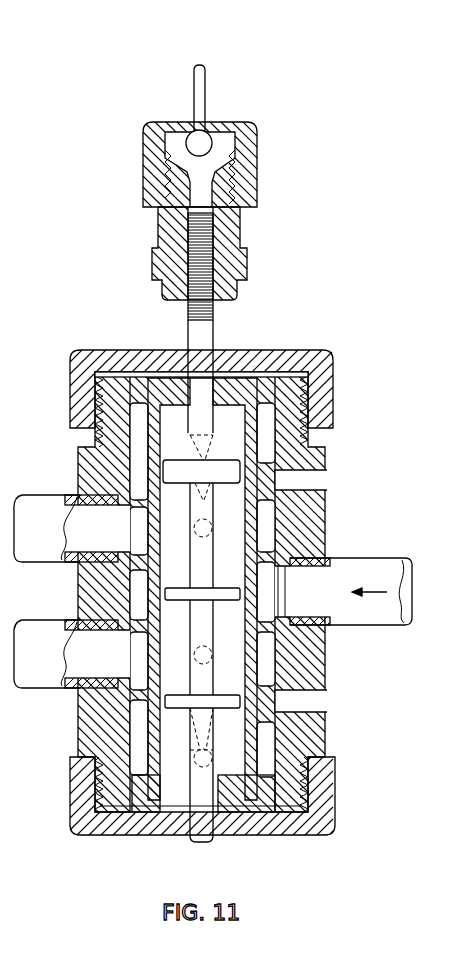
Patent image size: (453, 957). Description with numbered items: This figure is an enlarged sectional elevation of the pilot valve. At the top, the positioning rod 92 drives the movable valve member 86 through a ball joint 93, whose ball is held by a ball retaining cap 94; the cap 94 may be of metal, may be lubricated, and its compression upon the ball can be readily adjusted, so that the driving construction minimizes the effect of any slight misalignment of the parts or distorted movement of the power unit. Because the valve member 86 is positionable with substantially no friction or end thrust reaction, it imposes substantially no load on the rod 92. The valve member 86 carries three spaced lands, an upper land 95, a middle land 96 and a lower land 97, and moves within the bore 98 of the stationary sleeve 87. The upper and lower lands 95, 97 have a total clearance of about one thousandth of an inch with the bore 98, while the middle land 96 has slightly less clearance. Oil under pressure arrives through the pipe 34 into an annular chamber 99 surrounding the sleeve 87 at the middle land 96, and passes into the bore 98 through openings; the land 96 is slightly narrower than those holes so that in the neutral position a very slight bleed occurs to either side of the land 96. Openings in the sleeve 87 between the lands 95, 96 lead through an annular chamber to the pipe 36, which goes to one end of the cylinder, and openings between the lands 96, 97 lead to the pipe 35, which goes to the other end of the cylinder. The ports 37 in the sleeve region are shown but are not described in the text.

The positioning rod 92 is at (206, 93).
The ball retaining cap 94 is at (212, 132).
The ball joint 93 is at (283, 244).
The valve member 86 is at (215, 333).
The stationary sleeve 87 is at (262, 390).
The pipe 36 is at (47, 494).
The pipe 35 is at (48, 690).
The pipe 34 is at (353, 558).
The outlet ports 37 is at (315, 483).
The upper land 95 is at (185, 485).
The middle land 96 is at (188, 588).
The lower land 97 is at (196, 694).
The bore 98 is at (245, 621).
The annular chamber 99 is at (263, 587).